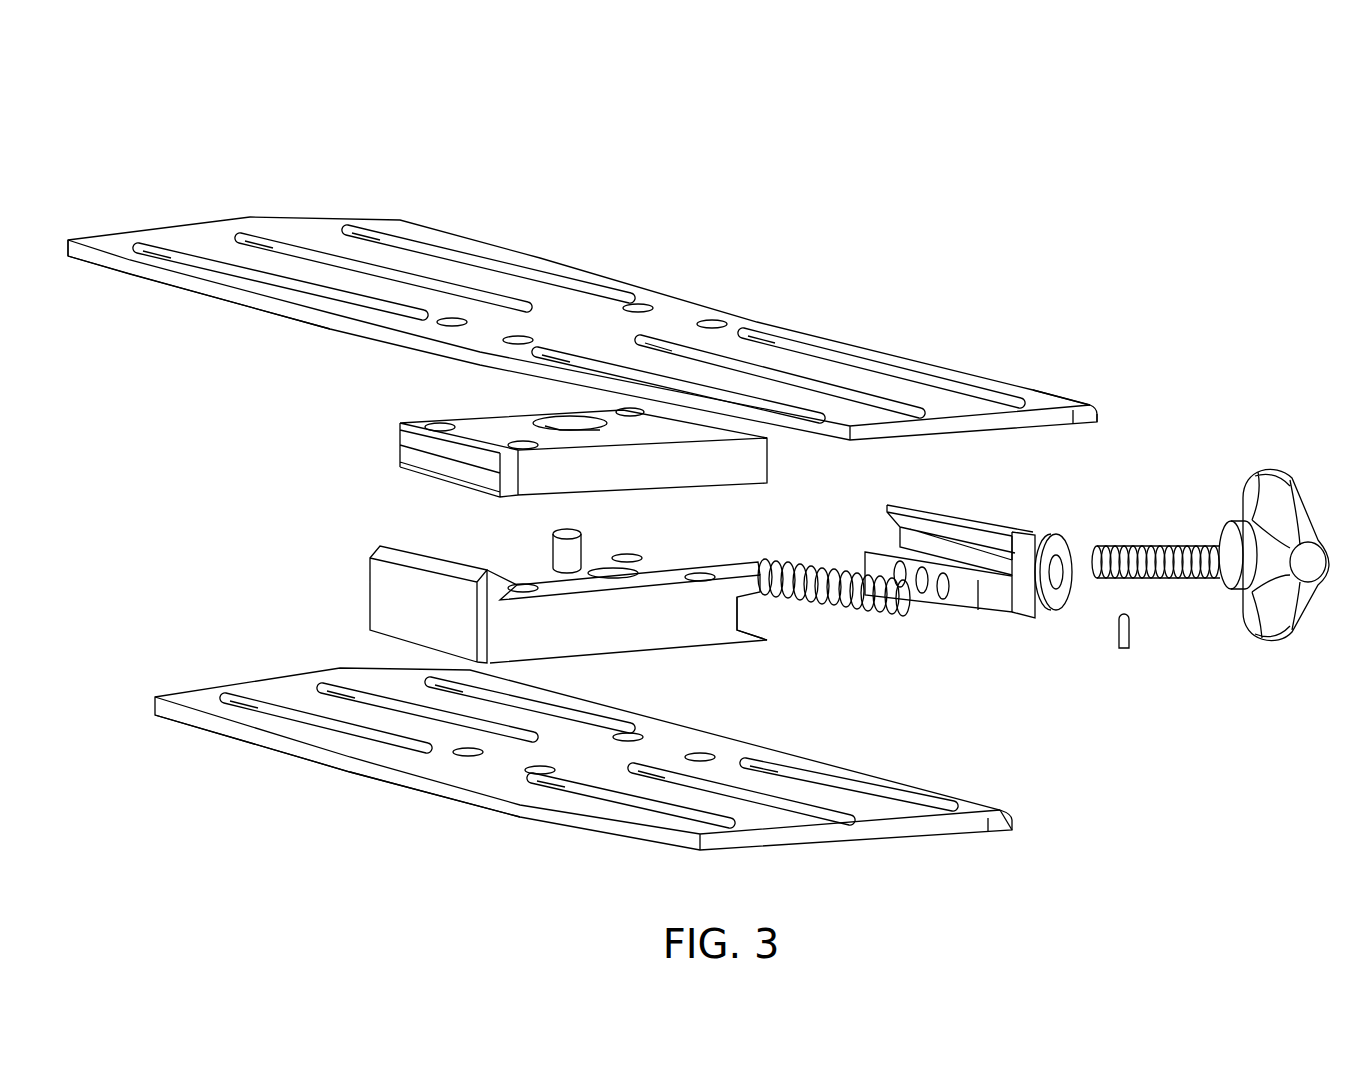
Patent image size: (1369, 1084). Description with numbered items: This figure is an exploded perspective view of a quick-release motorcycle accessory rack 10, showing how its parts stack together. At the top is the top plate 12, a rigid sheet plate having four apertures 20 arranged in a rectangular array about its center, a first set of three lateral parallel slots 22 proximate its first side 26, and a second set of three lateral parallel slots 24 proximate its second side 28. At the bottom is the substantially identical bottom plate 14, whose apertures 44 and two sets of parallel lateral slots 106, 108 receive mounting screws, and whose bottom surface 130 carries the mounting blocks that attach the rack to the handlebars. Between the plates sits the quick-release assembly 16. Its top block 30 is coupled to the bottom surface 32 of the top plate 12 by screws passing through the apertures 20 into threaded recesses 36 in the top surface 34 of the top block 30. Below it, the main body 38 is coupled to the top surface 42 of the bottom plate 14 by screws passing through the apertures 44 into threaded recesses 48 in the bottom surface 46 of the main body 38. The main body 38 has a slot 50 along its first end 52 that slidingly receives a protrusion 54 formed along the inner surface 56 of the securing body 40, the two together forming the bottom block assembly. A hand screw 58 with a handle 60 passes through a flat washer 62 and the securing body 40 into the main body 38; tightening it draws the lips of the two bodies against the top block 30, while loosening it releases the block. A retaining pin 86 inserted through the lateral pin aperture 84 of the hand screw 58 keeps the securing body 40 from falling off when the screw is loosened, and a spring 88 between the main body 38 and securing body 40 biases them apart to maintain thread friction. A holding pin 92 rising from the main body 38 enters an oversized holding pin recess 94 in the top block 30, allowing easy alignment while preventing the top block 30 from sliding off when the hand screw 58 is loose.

The quick-release motorcycle accessory rack 10 is at (502, 128).
The top plate 12 is at (757, 322).
The bottom plate 14 is at (325, 738).
The quick-release assembly 16 is at (279, 385).
The apertures 20 is at (712, 322).
The first set of three lateral parallel slots 22 is at (1040, 394).
The second set of three lateral parallel slots 24 is at (400, 221).
The first side 26 is at (1045, 424).
The second side 28 is at (124, 233).
The top block 30 is at (468, 415).
The bottom surface 32 is at (205, 298).
The top surface 34 is at (500, 422).
The threaded recesses 36 is at (712, 430).
The main body 38 is at (573, 637).
The securing body 40 is at (1000, 600).
The top surface 42 is at (742, 748).
The apertures 44 is at (700, 759).
The bottom surface 46 is at (678, 655).
The threaded recesses 48 is at (527, 586).
The slot 50 is at (745, 613).
The first end 52 is at (749, 566).
The protrusion 54 is at (945, 592).
The inner surface 56 is at (903, 542).
The hand screw 58 is at (1207, 580).
The handle 60 is at (1292, 602).
The flat washer 62 is at (1060, 540).
The lateral pin aperture 84 is at (1168, 546).
The retaining pin 86 is at (1122, 649).
The spring 88 is at (850, 576).
The holding pin 92 is at (556, 547).
The holding pin recess 94 is at (555, 420).
The parallel lateral slots 106 is at (953, 810).
The parallel lateral slots 108 is at (212, 697).
The bottom surface 130 is at (445, 789).